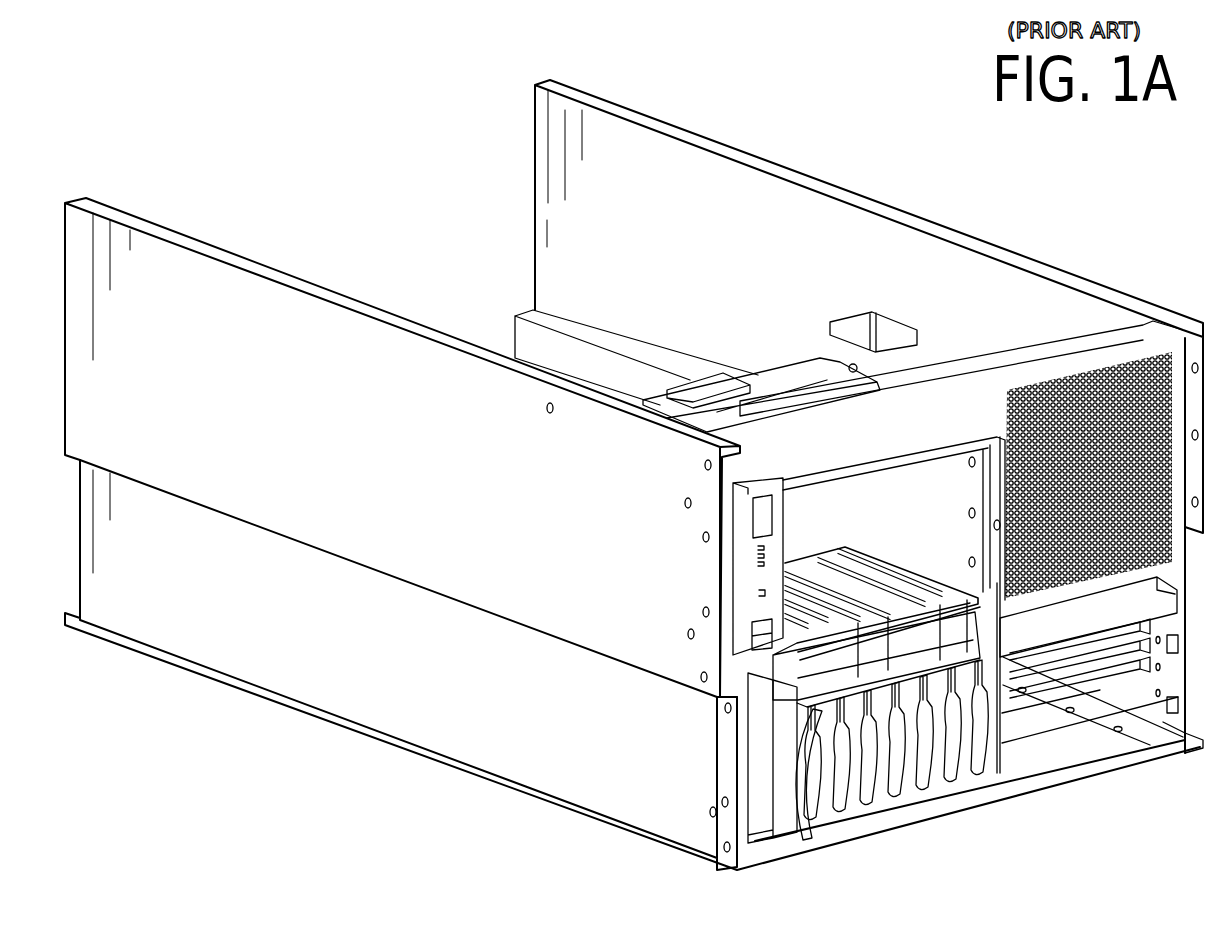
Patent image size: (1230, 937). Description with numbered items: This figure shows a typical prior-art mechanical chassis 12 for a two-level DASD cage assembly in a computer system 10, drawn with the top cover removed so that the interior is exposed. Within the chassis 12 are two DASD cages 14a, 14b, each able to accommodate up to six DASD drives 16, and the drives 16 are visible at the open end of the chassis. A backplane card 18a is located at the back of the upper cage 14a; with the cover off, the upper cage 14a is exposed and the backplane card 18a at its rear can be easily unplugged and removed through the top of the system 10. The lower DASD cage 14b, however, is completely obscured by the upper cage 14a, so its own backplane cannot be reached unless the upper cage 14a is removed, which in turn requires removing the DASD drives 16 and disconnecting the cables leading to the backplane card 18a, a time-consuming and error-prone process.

The computer system 10 is at (1108, 173).
The mechanical chassis 12 is at (757, 150).
The upper DASD cage 14a is at (750, 581).
The lower DASD cage 14b is at (758, 778).
The DASD drives 16 is at (977, 751).
The backplane card 18a is at (792, 370).